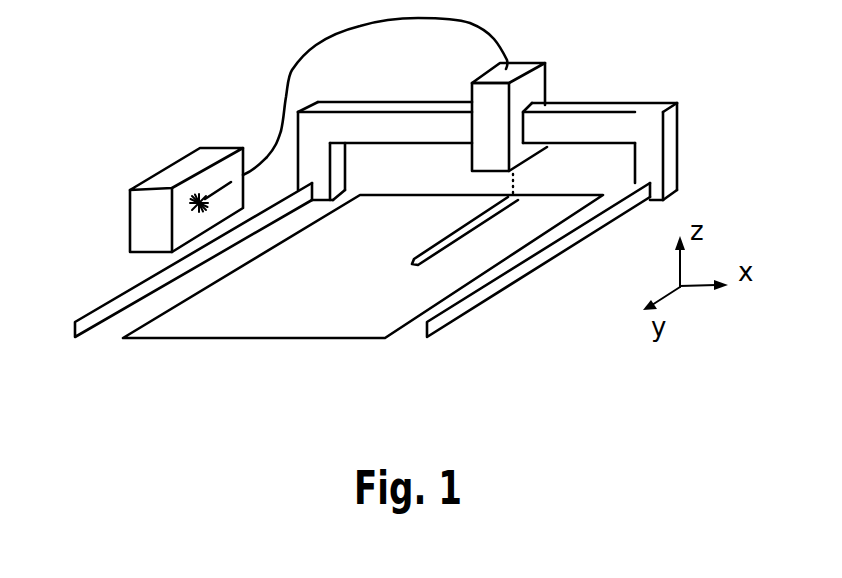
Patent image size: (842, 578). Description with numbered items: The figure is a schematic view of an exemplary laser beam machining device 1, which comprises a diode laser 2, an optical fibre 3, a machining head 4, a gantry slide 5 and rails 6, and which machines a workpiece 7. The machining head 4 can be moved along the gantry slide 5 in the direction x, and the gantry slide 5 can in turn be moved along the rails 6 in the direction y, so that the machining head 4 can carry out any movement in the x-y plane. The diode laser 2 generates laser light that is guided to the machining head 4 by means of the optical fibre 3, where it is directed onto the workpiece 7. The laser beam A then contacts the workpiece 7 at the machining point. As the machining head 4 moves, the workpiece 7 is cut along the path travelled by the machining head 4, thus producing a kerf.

The laser beam machining device 1 is at (105, 120).
The diode laser 2 is at (198, 163).
The optical fibre 3 is at (323, 40).
The machining head 4 is at (537, 85).
The gantry slide 5 is at (680, 124).
The rails 6 is at (518, 273).
The workpiece 7 is at (293, 322).
The laser beam A is at (518, 188).